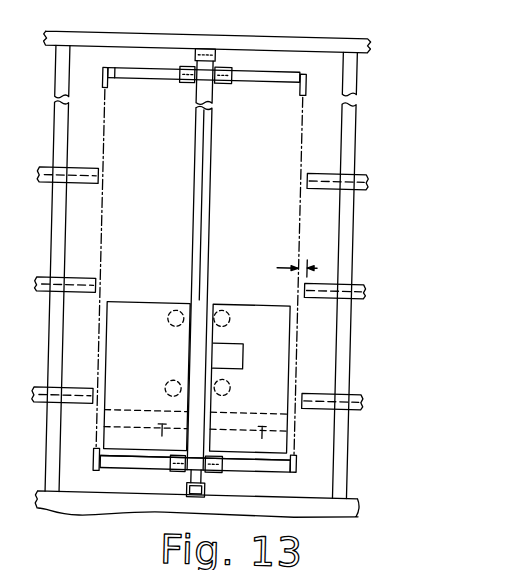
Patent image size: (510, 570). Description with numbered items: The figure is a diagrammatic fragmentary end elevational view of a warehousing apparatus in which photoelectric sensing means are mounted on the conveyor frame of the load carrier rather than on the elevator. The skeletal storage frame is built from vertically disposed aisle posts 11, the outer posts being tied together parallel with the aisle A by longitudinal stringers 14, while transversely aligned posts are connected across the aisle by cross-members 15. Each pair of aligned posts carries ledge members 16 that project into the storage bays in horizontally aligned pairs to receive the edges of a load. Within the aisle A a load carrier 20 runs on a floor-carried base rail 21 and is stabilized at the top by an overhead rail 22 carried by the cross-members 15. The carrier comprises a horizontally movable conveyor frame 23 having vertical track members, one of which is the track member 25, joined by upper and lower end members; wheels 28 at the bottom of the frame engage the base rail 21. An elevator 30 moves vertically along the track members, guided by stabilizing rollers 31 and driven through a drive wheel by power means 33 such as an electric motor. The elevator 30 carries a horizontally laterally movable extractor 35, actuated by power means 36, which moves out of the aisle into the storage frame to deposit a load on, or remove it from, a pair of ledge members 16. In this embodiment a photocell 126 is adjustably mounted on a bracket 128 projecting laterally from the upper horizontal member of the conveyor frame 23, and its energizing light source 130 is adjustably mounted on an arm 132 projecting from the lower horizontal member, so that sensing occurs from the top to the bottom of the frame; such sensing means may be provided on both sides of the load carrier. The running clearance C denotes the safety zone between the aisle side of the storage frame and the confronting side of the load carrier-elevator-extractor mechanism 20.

The aisle posts 11 is at (52, 230).
The longitudinal stringers 14 is at (74, 26).
The cross-members 15 is at (273, 44).
The ledge members 16 is at (74, 285).
The load carrier 20 is at (220, 289).
The base rail 21 is at (211, 489).
The overhead rail 22 is at (192, 50).
The conveyor frame 23 is at (197, 136).
The vertical track member 25 is at (209, 203).
The wheels 28 is at (190, 483).
The elevator 30 is at (143, 304).
The stabilizing rollers 31 is at (169, 326).
The power means 33 is at (234, 356).
The extractor 35 is at (124, 411).
The power means 36 is at (240, 440).
The photocell 126 is at (98, 83).
The bracket 128 is at (152, 82).
The light source 130 is at (98, 457).
The arm 132 is at (128, 471).
The aisle A is at (257, 96).
The running clearance C is at (290, 266).